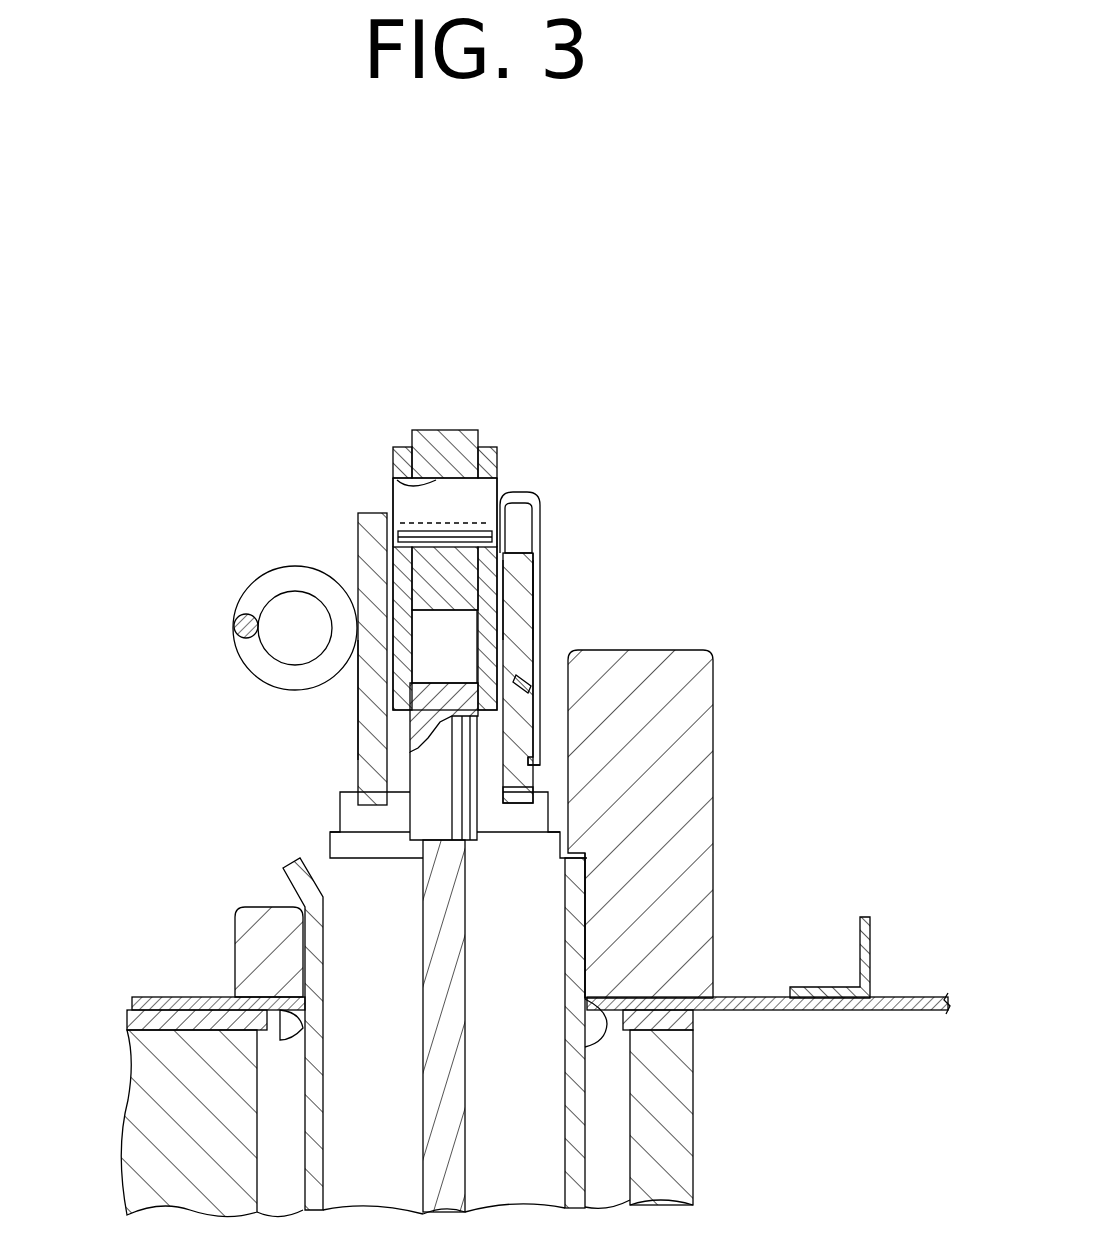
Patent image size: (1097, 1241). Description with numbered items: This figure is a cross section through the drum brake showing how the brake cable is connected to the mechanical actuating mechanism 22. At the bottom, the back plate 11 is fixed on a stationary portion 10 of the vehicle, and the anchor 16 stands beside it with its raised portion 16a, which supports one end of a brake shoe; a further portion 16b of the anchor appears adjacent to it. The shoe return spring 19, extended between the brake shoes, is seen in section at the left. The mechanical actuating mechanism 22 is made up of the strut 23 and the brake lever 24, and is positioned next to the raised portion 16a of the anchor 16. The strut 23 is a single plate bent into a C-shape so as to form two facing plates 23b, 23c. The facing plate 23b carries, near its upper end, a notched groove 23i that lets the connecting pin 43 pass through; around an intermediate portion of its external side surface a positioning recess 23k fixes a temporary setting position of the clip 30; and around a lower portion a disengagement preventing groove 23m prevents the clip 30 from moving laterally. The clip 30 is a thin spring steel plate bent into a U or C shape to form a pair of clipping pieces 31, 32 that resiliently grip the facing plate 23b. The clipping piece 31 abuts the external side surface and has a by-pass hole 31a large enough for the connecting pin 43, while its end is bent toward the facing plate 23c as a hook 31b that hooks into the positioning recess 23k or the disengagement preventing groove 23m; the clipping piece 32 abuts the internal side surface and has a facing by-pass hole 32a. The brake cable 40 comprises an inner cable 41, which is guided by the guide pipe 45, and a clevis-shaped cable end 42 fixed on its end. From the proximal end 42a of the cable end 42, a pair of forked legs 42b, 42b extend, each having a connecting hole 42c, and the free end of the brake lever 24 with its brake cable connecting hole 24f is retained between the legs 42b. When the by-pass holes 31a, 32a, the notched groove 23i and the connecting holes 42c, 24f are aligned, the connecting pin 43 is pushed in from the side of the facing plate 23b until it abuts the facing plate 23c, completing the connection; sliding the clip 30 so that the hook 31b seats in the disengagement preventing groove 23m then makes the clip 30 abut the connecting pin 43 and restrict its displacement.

The stationary portion 10 is at (142, 1160).
The back plate 11 is at (131, 1000).
The anchor 16 is at (713, 915).
The raised portion 16a is at (693, 935).
The support block 16b is at (243, 932).
The shoe return spring 19 is at (247, 593).
The mechanical actuating mechanism 22 is at (319, 376).
The strut 23 is at (348, 530).
The facing plate 23b is at (543, 650).
The facing plate 23c is at (357, 693).
The notched groove 23i is at (535, 530).
The positioning recess 23k is at (538, 703).
The disengagement preventing groove 23m is at (548, 807).
The brake lever 24 is at (453, 430).
The brake cable connecting hole 24f is at (395, 477).
The clip 30 is at (512, 495).
The clipping piece 31 is at (538, 725).
The by-pass hole 31a is at (540, 603).
The hook 31b is at (538, 792).
The clipping piece 32 is at (445, 615).
The by-pass hole 32a is at (541, 553).
The brake cable 40 is at (474, 1120).
The inner cable 41 is at (422, 1098).
The cable end 42 is at (477, 818).
The proximal end 42a is at (430, 810).
The forked leg 42b is at (397, 447).
The connecting hole 42c is at (487, 537).
The connecting pin 43 is at (503, 490).
The guide pipe 45 is at (585, 1083).